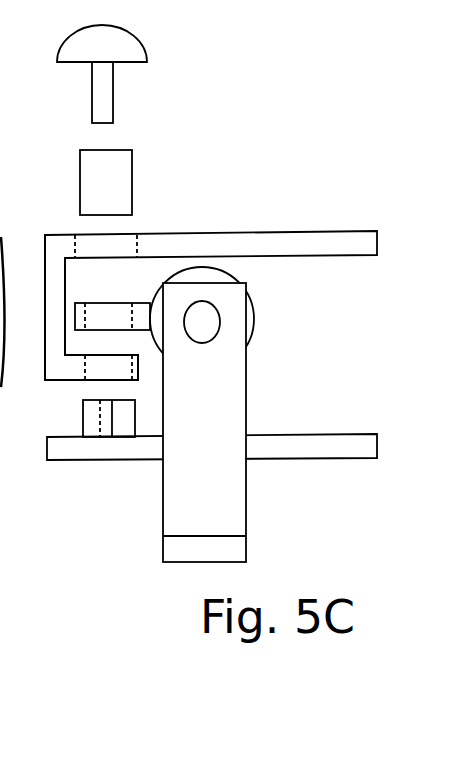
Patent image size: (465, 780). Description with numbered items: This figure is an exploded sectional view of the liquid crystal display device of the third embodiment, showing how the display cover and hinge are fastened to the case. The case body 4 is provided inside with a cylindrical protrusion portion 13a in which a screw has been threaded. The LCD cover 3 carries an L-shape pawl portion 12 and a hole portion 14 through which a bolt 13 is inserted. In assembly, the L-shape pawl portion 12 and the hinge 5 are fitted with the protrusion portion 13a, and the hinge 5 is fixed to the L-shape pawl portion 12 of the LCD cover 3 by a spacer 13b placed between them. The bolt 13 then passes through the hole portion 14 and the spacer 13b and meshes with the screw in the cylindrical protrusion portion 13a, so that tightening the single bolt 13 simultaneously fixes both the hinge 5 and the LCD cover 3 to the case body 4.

The LCD cover 3 is at (335, 240).
The case body 4 is at (133, 462).
The hinge 5 is at (220, 453).
The L-shape pawl portion 12 is at (70, 368).
The bolt 13 is at (143, 52).
The cylindrical protrusion portion 13a is at (93, 422).
The spacer 13b is at (132, 180).
The hole portion 14 is at (97, 247).